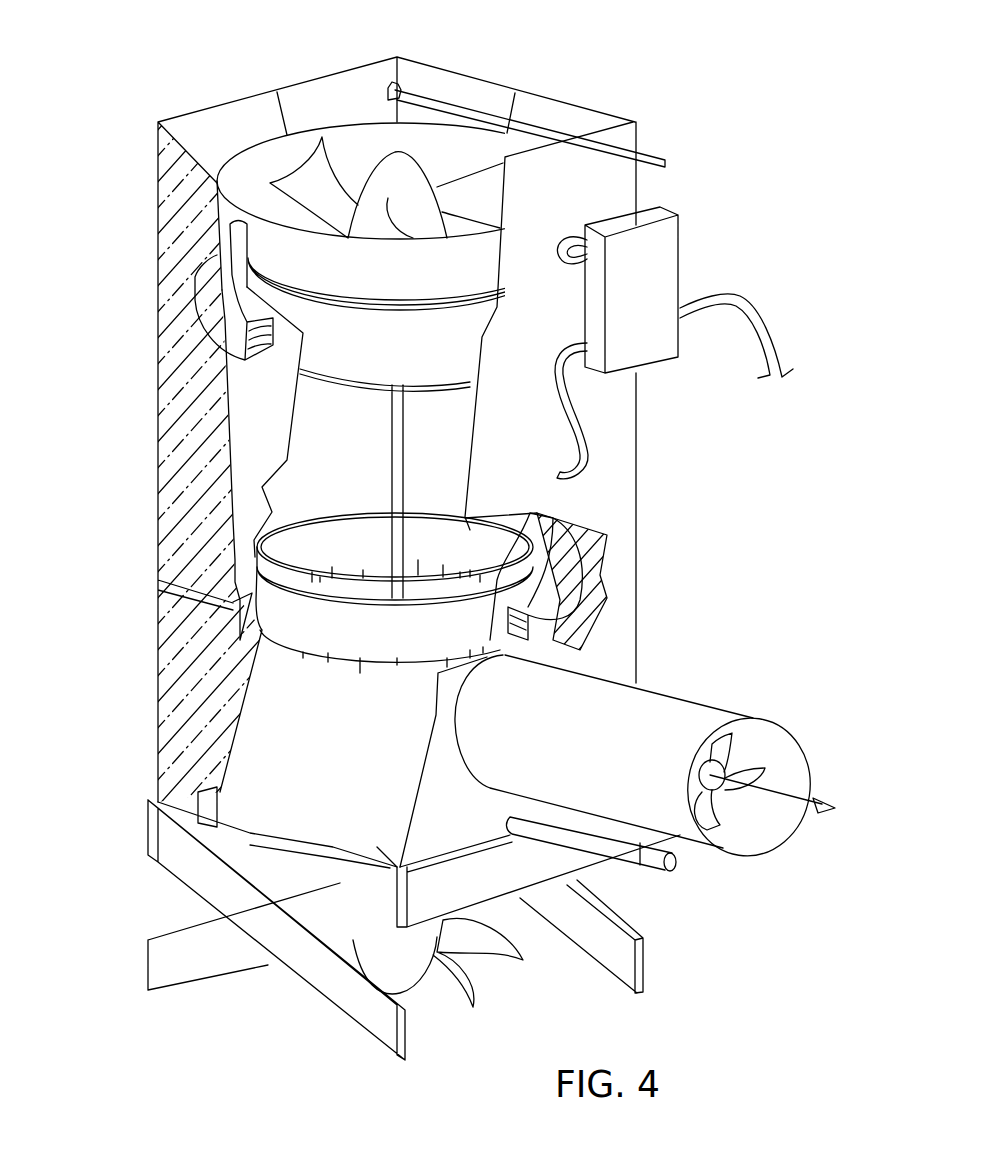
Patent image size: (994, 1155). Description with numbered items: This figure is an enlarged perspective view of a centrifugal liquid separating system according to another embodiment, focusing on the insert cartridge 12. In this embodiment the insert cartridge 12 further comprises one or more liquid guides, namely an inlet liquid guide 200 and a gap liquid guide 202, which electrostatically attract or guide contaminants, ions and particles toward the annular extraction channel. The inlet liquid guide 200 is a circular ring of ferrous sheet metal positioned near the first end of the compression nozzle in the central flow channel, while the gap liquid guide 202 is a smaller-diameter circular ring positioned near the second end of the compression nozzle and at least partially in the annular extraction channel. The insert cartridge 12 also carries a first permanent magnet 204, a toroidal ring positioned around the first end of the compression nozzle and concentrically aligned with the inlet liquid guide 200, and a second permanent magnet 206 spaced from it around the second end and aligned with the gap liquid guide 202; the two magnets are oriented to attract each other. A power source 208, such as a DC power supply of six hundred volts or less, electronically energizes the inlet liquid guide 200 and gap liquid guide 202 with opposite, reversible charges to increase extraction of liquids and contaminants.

The insert cartridge 12 is at (434, 530).
The inlet liquid guide 200 is at (485, 365).
The gap liquid guide 202 is at (276, 647).
The first permanent magnet 204 is at (165, 310).
The second permanent magnet 206 is at (618, 578).
The power source 208 is at (710, 272).